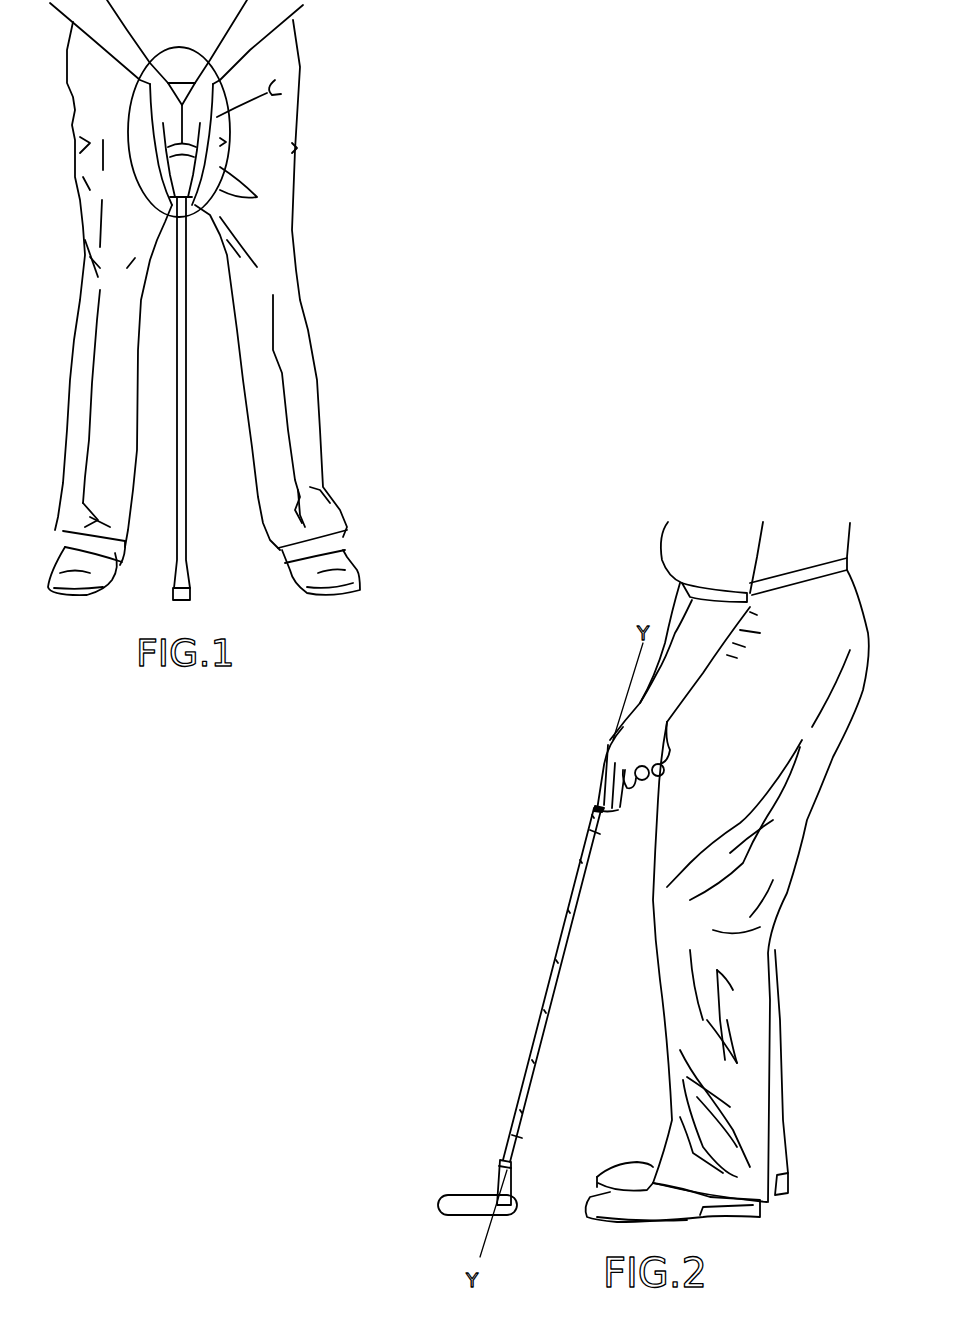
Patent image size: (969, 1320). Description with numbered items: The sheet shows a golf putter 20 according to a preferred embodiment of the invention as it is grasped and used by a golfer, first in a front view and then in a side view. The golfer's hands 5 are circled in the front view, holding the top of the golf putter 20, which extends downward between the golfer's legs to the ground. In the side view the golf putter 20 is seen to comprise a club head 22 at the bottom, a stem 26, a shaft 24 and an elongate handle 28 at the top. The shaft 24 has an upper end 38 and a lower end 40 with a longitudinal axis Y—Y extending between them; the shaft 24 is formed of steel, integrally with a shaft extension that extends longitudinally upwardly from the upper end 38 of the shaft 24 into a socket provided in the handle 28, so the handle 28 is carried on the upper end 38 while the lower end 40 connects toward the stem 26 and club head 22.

In FIG. 1, the user's hands gripping the cane 5 is at (224, 140).
In FIG. 1, the golf putter 20 is at (190, 437).
In FIG. 2, the golf putter 20 is at (464, 1008).
In FIG. 2, the club head 22 is at (464, 1195).
In FIG. 2, the shaft 24 is at (553, 967).
In FIG. 2, the stem 26 is at (499, 1185).
In FIG. 2, the elongate handle 28 is at (594, 802).
In FIG. 2, the upper end 38 is at (603, 840).
In FIG. 2, the lower end 40 is at (533, 1140).